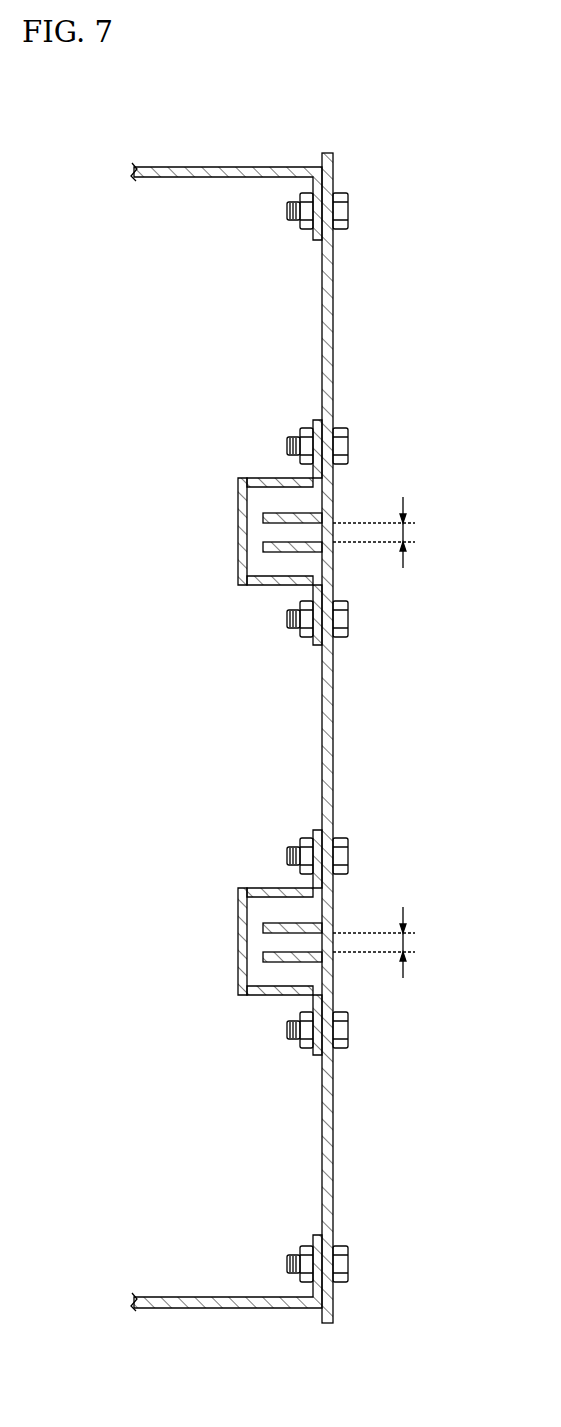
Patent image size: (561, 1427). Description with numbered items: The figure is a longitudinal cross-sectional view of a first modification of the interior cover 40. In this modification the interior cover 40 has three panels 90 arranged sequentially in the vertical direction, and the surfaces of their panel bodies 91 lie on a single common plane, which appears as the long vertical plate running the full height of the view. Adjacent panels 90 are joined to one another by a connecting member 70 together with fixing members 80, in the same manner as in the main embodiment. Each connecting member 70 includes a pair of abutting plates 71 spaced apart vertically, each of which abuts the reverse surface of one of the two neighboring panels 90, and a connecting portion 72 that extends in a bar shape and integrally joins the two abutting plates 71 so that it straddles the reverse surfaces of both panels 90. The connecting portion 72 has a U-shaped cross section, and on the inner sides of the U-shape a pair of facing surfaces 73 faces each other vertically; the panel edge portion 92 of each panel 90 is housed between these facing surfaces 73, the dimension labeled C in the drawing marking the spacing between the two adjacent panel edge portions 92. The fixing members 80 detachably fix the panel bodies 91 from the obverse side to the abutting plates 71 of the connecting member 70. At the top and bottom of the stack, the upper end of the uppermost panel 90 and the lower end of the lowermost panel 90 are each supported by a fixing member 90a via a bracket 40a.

The interior cover 40 is at (455, 143).
The bracket 40a is at (212, 167).
The panel 90 is at (364, 298).
The fixing member 90a is at (338, 208).
The panel body 91 is at (333, 349).
The panel edge portion 92 is at (298, 518).
The connecting member 70 is at (230, 527).
The abutting plate 71 is at (312, 421).
The connecting portion 72 is at (243, 505).
The facing surfaces 73 is at (268, 492).
The fixing member 80 is at (340, 444).
The clearance gap C is at (385, 737).